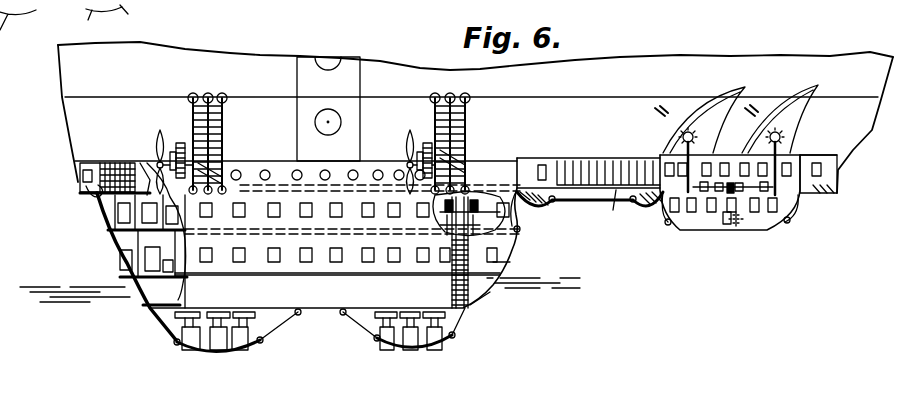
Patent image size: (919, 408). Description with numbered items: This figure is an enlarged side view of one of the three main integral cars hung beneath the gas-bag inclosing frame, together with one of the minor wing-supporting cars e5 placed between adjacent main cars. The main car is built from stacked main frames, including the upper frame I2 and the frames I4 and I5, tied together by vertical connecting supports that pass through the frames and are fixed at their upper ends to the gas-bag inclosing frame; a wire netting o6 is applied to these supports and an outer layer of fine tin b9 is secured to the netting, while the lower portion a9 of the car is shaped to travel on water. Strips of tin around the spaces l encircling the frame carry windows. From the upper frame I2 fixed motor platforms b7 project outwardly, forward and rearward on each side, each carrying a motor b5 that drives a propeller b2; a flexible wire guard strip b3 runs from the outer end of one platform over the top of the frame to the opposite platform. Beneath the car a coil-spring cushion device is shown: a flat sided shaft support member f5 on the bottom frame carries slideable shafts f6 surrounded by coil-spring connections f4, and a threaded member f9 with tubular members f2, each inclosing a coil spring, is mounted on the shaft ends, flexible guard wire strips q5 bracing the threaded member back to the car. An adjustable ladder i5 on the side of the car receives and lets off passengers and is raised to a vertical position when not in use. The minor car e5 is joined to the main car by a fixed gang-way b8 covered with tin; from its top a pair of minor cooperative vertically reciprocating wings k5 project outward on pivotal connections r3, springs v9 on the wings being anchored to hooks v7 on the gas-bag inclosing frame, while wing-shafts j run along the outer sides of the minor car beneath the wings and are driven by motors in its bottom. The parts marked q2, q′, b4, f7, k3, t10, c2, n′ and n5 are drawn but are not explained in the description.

The part of upper structure q2 is at (85, 24).
The part of upper structure q′ is at (130, 18).
The column with opening b4 is at (327, 58).
The space l is at (341, 120).
The propeller b2 is at (160, 133).
The motor b5 is at (180, 143).
The flexible wire guard strip b3 is at (223, 117).
The fixed motor platform b7 is at (247, 163).
The outer layer of fine tin b9 is at (147, 160).
The wire netting o6 is at (110, 163).
The fixed gang-way b8 is at (78, 177).
The upper main frame I2 is at (90, 203).
The main frame I4 is at (120, 275).
The main frame I5 is at (143, 308).
The coil-spring connection f4 is at (182, 327).
The integral slideable shaft f6 is at (175, 345).
The support block f7 is at (197, 338).
The integral tubular member f2 is at (237, 338).
The threaded member f9 is at (260, 343).
The flat sided shaft support member f5 is at (375, 338).
The flexible guard wire strip q5 is at (463, 318).
The windows k3 is at (338, 208).
The mechanism housing t10 is at (455, 223).
The adjustable ladder i5 is at (493, 260).
The column c2 is at (457, 282).
The lower portion of main integral car a9 is at (485, 295).
The minor cooperative vertically reciprocating wing k5 is at (817, 85).
The hook v7 is at (662, 112).
The spring v9 is at (673, 108).
The pivotal connection r3 is at (663, 152).
The lamp n′ is at (703, 147).
The axle n5 is at (777, 190).
The wing-shaft j is at (730, 192).
The minor wing-supporting car e5 is at (722, 222).